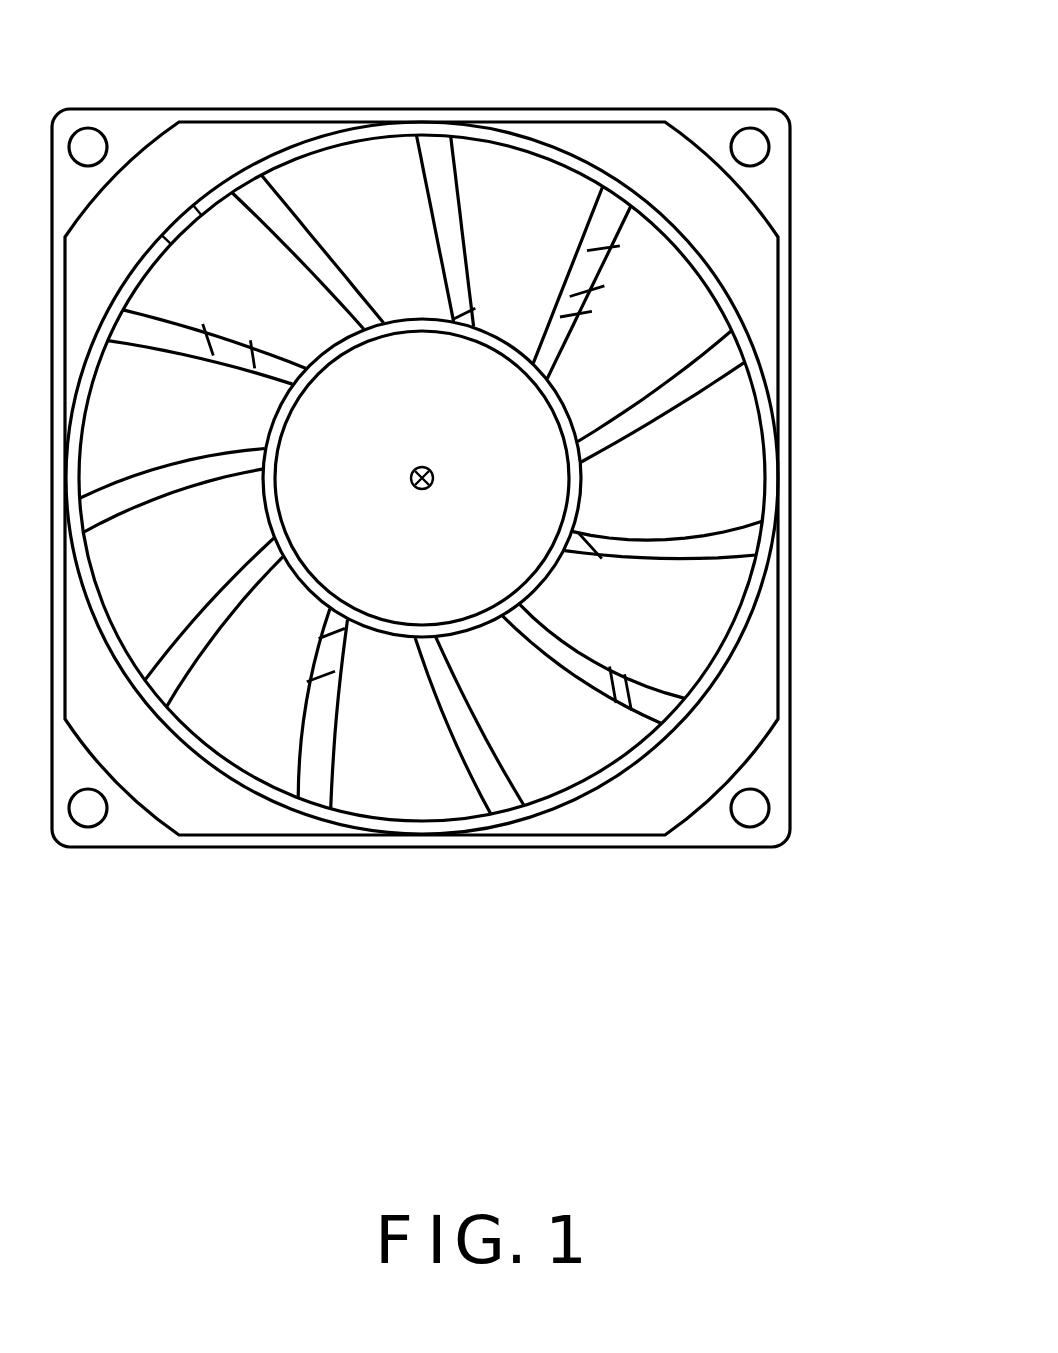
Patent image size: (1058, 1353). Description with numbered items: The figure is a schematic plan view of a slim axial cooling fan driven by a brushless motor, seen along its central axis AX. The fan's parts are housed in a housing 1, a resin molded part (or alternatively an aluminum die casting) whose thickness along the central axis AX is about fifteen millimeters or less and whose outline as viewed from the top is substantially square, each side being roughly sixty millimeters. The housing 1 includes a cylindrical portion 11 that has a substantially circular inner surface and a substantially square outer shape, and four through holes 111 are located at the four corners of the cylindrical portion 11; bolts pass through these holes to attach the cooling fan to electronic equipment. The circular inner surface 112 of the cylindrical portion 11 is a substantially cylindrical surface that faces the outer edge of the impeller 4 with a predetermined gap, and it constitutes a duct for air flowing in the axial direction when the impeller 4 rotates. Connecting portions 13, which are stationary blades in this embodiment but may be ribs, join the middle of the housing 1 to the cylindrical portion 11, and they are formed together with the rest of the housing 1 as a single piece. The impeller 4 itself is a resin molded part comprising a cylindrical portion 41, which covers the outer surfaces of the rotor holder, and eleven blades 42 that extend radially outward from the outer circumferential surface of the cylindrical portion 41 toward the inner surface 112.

The housing 1 is at (500, 490).
The cylindrical portion 11 is at (486, 490).
The through holes 111 is at (98, 129).
The inner surface 112 is at (742, 329).
The connecting portions 13 is at (660, 708).
The impeller 4 is at (514, 474).
The cylindrical portion 41 is at (537, 505).
The blades 42 is at (720, 442).
The central axis AX is at (415, 468).